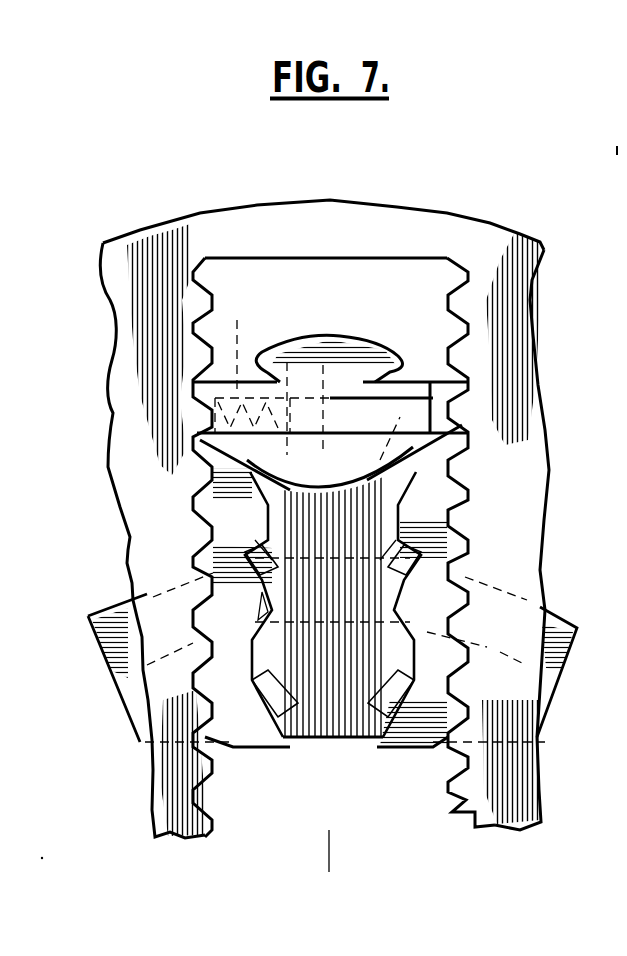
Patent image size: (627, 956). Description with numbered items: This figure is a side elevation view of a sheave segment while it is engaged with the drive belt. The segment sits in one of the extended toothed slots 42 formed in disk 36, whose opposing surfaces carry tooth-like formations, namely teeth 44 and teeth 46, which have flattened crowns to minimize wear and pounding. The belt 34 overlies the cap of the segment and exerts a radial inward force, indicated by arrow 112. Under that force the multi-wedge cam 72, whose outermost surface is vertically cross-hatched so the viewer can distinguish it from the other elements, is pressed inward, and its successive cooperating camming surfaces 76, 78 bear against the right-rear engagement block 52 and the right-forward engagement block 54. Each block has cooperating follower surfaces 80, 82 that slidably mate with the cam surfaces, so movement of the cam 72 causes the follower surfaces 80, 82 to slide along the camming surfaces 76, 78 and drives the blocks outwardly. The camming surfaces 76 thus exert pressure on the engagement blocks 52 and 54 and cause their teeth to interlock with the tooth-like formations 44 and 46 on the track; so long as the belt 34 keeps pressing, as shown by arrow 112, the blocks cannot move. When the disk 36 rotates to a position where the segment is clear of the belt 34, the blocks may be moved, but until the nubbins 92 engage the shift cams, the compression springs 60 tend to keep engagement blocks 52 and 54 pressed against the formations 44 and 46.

The belt 34 is at (563, 622).
The disk 36 is at (130, 303).
The toothed slot 42 is at (352, 255).
The teeth 44 is at (200, 518).
The teeth 46 is at (457, 520).
The right-rear engagement block 52 is at (257, 760).
The right-forward engagement block 54 is at (408, 760).
The compression spring 60 is at (244, 343).
The multi-wedge cam 72 is at (329, 872).
The camming surface 76 is at (213, 578).
The camming surface 78 is at (280, 623).
The follower surface 80 is at (212, 622).
The follower surface 82 is at (267, 627).
The nubbin 92 is at (345, 348).
The arrow 112 is at (370, 851).